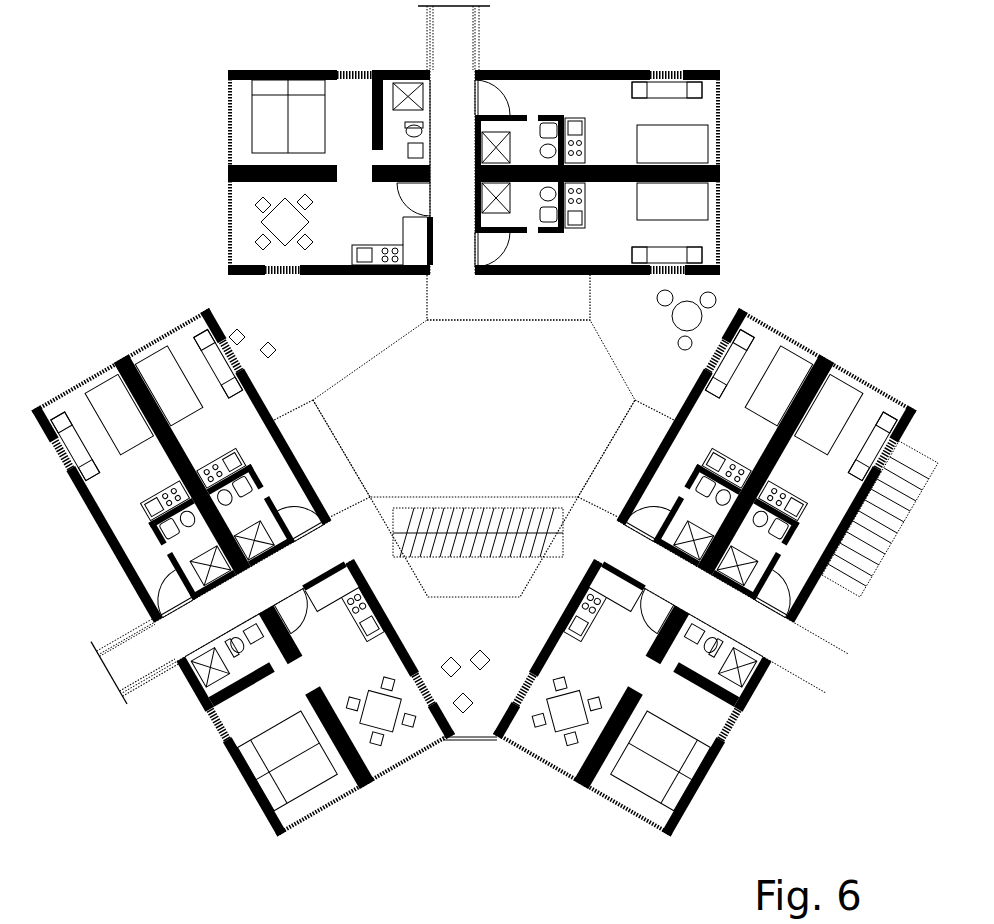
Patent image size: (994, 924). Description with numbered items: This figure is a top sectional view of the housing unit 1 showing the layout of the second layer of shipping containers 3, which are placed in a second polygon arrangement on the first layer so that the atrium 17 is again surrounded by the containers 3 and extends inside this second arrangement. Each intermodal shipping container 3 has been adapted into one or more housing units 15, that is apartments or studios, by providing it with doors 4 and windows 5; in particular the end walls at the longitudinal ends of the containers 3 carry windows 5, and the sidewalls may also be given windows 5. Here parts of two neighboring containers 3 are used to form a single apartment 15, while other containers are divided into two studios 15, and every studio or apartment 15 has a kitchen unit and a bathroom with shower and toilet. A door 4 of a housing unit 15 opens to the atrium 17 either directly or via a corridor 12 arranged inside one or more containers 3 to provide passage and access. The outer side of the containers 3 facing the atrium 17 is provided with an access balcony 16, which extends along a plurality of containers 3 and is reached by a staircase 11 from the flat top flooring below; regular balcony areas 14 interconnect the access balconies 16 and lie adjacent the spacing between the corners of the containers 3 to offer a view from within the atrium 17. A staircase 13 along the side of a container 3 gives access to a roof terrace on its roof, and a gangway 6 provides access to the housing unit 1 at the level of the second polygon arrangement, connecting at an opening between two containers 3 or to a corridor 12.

The housing unit 1 is at (122, 60).
The shipping container 3 is at (318, 55).
The door 4 is at (485, 97).
The window 5 is at (228, 114).
The gangway 6 is at (463, 27).
The staircase 11 is at (497, 525).
The corridor 12 is at (452, 117).
The staircase 13 is at (870, 608).
The balcony area 14 is at (212, 282).
The housing unit 15 is at (332, 236).
The access balcony 16 is at (507, 300).
The atrium 17 is at (431, 426).